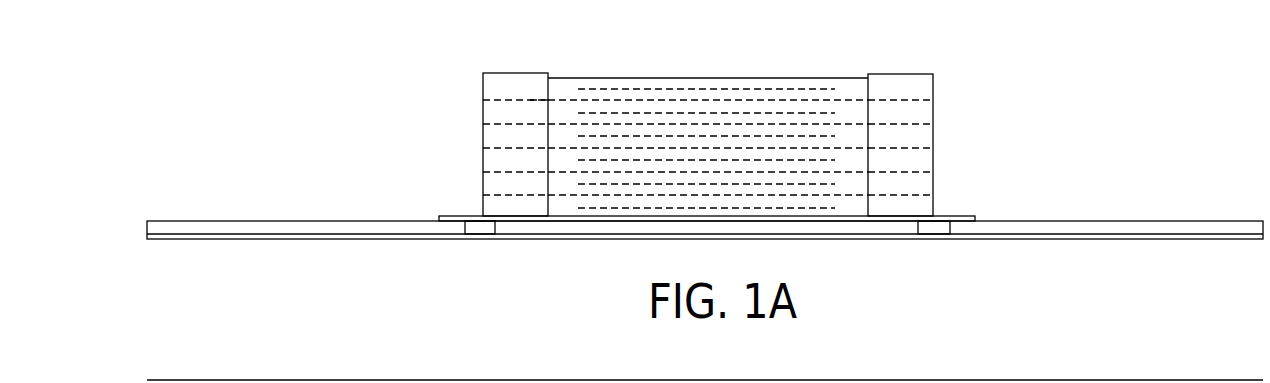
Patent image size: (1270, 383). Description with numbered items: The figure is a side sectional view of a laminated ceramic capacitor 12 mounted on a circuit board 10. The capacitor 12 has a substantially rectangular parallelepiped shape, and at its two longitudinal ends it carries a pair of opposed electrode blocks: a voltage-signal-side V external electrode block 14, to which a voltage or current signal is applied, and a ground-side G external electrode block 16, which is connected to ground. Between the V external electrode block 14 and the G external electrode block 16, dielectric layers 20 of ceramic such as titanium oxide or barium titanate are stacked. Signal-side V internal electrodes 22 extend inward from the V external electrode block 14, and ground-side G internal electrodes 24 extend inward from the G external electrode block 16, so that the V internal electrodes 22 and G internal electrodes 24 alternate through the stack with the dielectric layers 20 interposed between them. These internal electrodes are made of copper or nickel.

The circuit board 10 is at (1088, 228).
The laminated ceramic capacitor 12 is at (956, 100).
The V external electrode block 14 is at (500, 87).
The G external electrode block 16 is at (895, 73).
The dielectric layers 20 is at (737, 80).
The V internal electrodes 22 is at (532, 100).
The G internal electrodes 24 is at (652, 88).